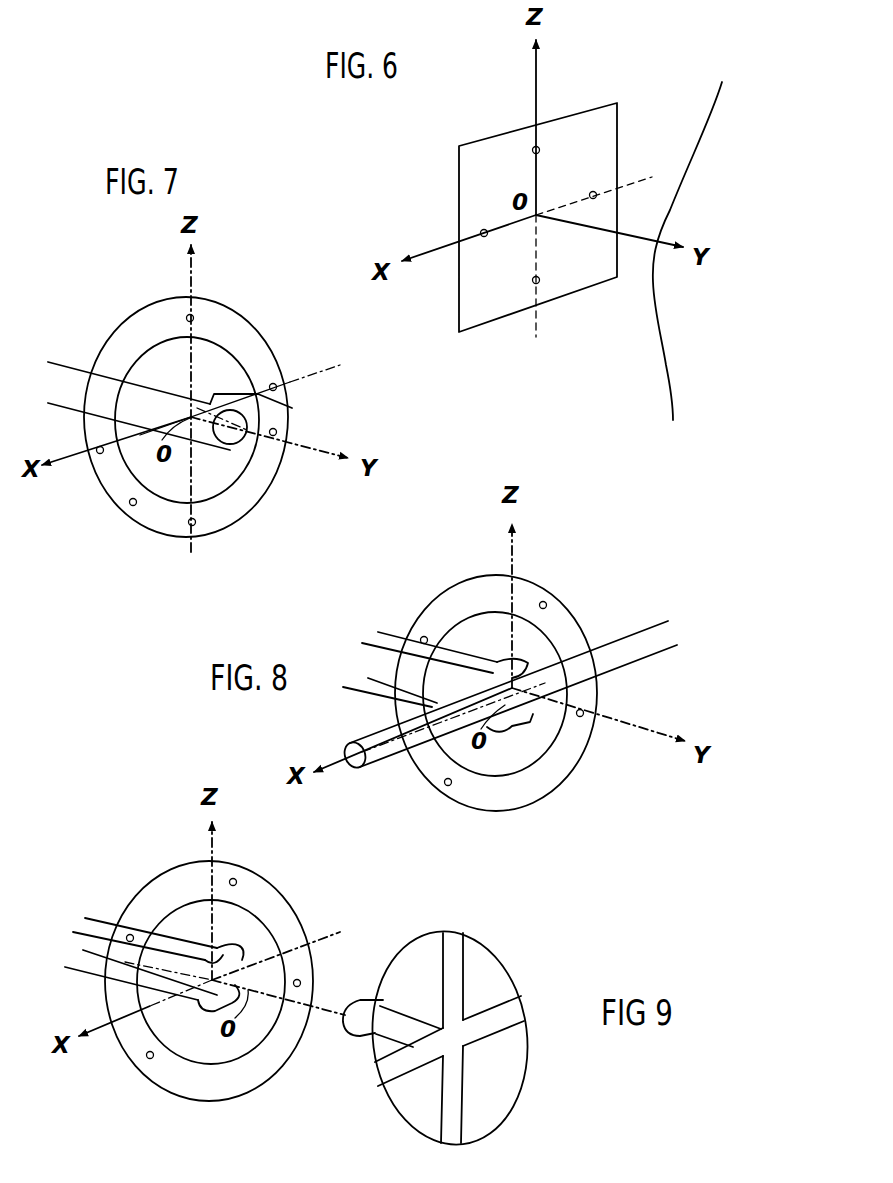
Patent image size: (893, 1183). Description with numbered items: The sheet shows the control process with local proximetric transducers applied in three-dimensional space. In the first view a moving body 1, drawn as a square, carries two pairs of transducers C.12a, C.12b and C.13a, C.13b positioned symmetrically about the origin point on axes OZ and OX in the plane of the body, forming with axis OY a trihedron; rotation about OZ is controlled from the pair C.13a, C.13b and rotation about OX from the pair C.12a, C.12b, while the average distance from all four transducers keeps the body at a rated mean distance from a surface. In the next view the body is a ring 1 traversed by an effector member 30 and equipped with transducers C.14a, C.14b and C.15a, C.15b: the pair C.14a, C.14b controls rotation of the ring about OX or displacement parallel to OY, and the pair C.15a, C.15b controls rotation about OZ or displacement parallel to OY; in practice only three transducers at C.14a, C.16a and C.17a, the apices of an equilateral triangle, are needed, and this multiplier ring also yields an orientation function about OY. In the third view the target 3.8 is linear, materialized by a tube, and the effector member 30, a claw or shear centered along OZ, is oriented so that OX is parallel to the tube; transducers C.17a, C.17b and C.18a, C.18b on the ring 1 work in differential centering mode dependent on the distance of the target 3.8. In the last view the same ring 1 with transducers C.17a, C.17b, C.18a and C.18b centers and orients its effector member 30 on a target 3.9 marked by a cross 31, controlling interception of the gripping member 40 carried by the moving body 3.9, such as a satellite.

In FIG. 6, the moving body / ring 1 is at (455, 169).
In FIG. 7, the moving body / ring 1 is at (152, 325).
In FIG. 8, the moving body / ring 1 is at (548, 788).
In FIG. 9, the moving body / ring 1 is at (238, 1090).
In FIG. 7, the effector member 30 is at (293, 409).
In FIG. 8, the effector member 30 is at (496, 658).
In FIG. 9, the effector member 30 is at (105, 920).
In FIG. 9, the cross 31 is at (503, 1012).
In FIG. 6, the target 3.8 is at (712, 110).
In FIG. 8, the target 3.8 is at (623, 640).
In FIG. 9, the target / moving body 3.9 is at (499, 1062).
In FIG. 9, the gripping member 40 is at (362, 1027).
In FIG. 6, the proximetric transducer C.12a is at (532, 150).
In FIG. 6, the proximetric transducer C.12b is at (540, 280).
In FIG. 6, the proximetric transducer C.13a is at (594, 192).
In FIG. 6, the proximetric transducer C.13b is at (481, 232).
In FIG. 7, the proximetric transducer C.14a is at (194, 318).
In FIG. 7, the proximetric transducer C.14b is at (195, 525).
In FIG. 7, the proximetric transducer C.15a is at (275, 383).
In FIG. 7, the proximetric transducer C.15b is at (100, 454).
In FIG. 7, the proximetric transducer C.16a is at (133, 506).
In FIG. 7, the proximetric transducer C.17a is at (275, 436).
In FIG. 8, the proximetric transducer C.17a is at (420, 640).
In FIG. 9, the proximetric transducer C.17a is at (131, 934).
In FIG. 8, the proximetric transducer C.17b is at (446, 785).
In FIG. 9, the proximetric transducer C.17b is at (147, 1056).
In FIG. 8, the proximetric transducer C.18a is at (543, 601).
In FIG. 9, the proximetric transducer C.18a is at (236, 880).
In FIG. 8, the proximetric transducer C.18b is at (583, 710).
In FIG. 9, the proximetric transducer C.18b is at (300, 981).